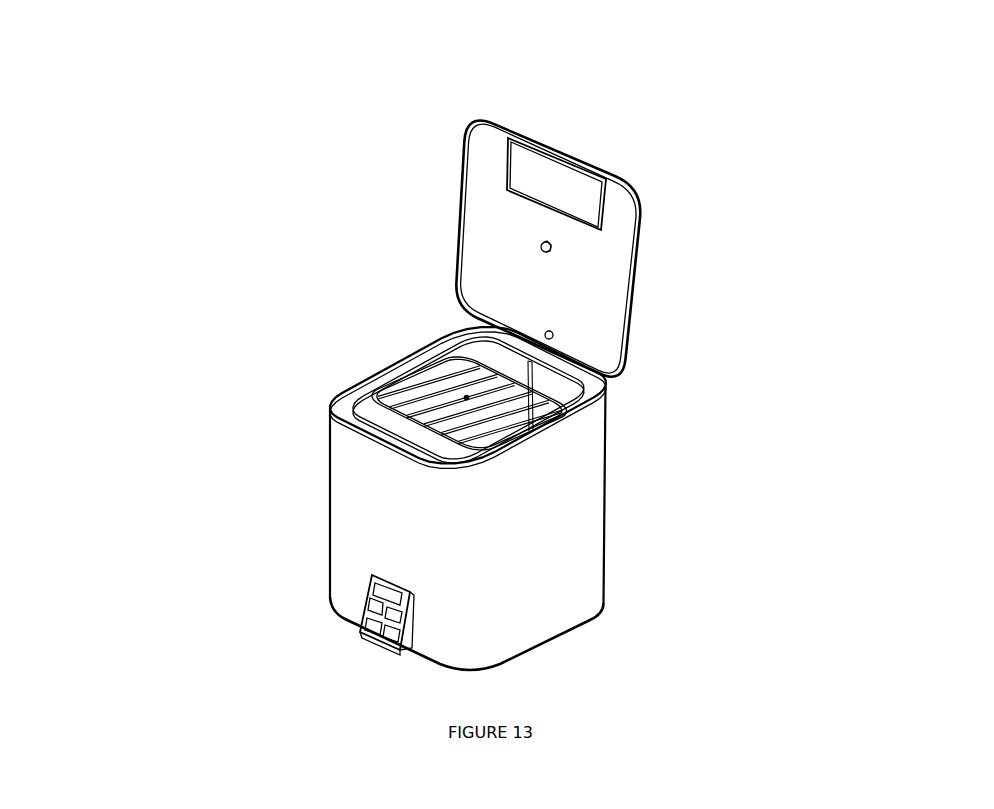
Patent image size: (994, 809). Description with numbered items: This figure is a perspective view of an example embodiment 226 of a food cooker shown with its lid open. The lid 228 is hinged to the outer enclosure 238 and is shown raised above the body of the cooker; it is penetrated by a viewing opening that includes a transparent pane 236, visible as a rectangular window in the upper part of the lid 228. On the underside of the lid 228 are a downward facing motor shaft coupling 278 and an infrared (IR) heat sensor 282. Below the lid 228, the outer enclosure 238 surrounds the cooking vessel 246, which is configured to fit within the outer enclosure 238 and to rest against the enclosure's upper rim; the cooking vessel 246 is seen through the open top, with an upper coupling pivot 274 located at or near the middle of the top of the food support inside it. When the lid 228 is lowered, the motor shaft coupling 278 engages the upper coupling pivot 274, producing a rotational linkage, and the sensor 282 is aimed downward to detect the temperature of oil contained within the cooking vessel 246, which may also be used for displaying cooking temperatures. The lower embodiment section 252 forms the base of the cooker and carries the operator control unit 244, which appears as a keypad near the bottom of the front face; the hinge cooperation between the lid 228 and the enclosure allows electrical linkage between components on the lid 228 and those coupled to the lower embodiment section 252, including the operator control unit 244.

The example embodiment 226 is at (642, 127).
The lid 228 is at (600, 330).
The transparent pane 236 is at (555, 184).
The outer enclosure 238 is at (565, 528).
The operator control unit 244 is at (385, 627).
The cooking vessel 246 is at (457, 342).
The lower embodiment section 252 is at (379, 502).
The upper coupling pivot 274 is at (464, 397).
The motor shaft coupling 278 is at (541, 244).
The infrared (IR) heat sensor 282 is at (545, 332).